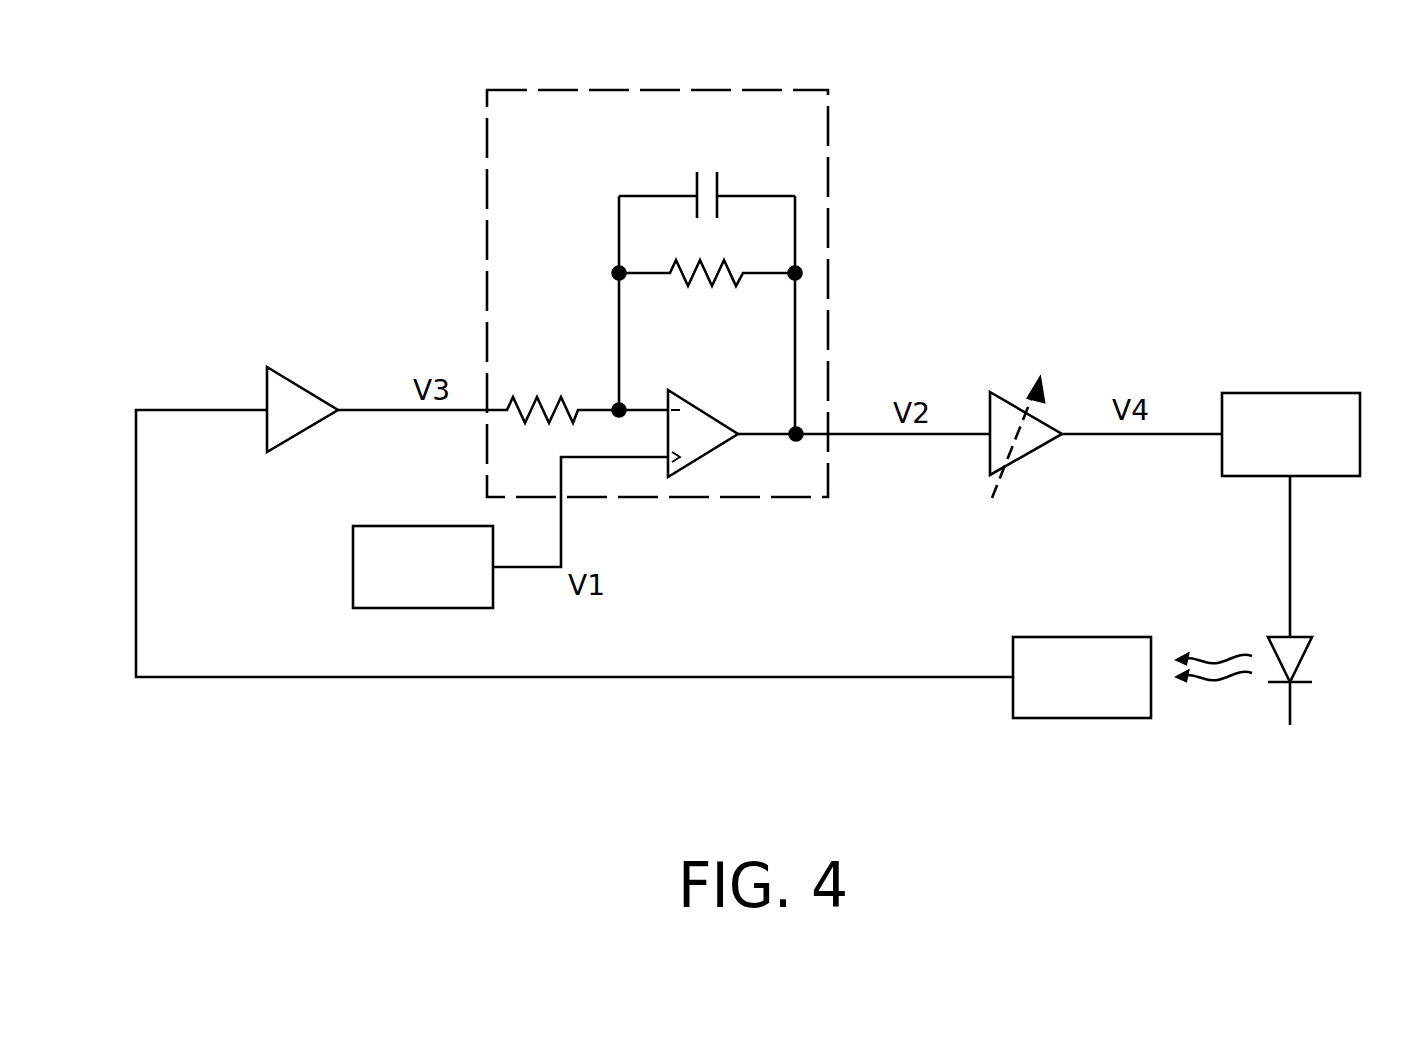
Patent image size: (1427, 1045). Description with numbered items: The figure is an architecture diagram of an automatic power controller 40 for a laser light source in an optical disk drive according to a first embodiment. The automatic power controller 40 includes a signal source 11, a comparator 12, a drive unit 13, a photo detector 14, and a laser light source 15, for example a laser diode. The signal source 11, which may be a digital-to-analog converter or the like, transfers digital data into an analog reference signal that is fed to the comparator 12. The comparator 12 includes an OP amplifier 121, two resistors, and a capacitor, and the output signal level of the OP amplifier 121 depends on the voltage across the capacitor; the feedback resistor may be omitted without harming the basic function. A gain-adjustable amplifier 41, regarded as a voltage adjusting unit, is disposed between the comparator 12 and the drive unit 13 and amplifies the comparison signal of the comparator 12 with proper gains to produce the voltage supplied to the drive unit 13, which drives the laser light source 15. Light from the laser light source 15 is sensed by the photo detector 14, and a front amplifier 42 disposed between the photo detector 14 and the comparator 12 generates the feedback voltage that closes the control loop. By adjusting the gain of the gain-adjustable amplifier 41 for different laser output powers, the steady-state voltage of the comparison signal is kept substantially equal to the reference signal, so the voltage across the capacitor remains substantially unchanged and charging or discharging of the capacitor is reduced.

The automatic power controller 40 is at (300, 152).
The comparator 12 is at (651, 348).
The OP amplifier 121 is at (700, 448).
The front amplifier 42 is at (287, 395).
The gain-adjustable amplifier 41 is at (1003, 410).
The drive unit 13 is at (1288, 393).
The laser light source 15 is at (1320, 662).
The photo detector 14 is at (1090, 718).
The signal source 11 is at (440, 595).